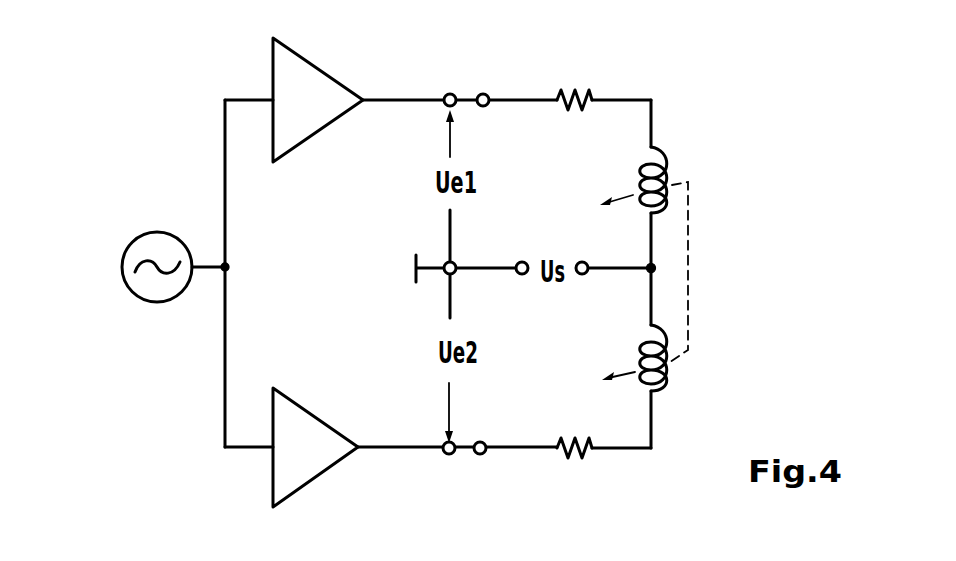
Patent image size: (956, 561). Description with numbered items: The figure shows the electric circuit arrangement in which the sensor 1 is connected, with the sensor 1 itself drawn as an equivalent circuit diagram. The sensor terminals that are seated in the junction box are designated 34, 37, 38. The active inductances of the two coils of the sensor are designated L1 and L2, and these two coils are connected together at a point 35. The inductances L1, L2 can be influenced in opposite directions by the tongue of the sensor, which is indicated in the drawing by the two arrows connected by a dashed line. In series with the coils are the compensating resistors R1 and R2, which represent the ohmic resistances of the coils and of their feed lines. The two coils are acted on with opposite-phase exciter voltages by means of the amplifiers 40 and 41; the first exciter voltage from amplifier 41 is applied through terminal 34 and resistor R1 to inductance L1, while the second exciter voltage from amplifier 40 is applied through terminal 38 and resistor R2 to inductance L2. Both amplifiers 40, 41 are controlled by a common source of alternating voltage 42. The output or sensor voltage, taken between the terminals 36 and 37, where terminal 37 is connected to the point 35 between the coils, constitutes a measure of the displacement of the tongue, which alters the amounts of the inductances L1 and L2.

The sensor 1 is at (663, 248).
The terminal 34 is at (484, 93).
The point 35 is at (647, 272).
The terminal 36 is at (524, 261).
The terminal 37 is at (587, 263).
The terminal 38 is at (480, 455).
The amplifier 40 is at (330, 472).
The amplifier 41 is at (330, 74).
The source of alternating voltage 42 is at (157, 302).
The compensating resistor R1 is at (574, 80).
The compensating resistor R2 is at (574, 471).
The active inductance L1 is at (683, 180).
The active inductance L2 is at (682, 358).